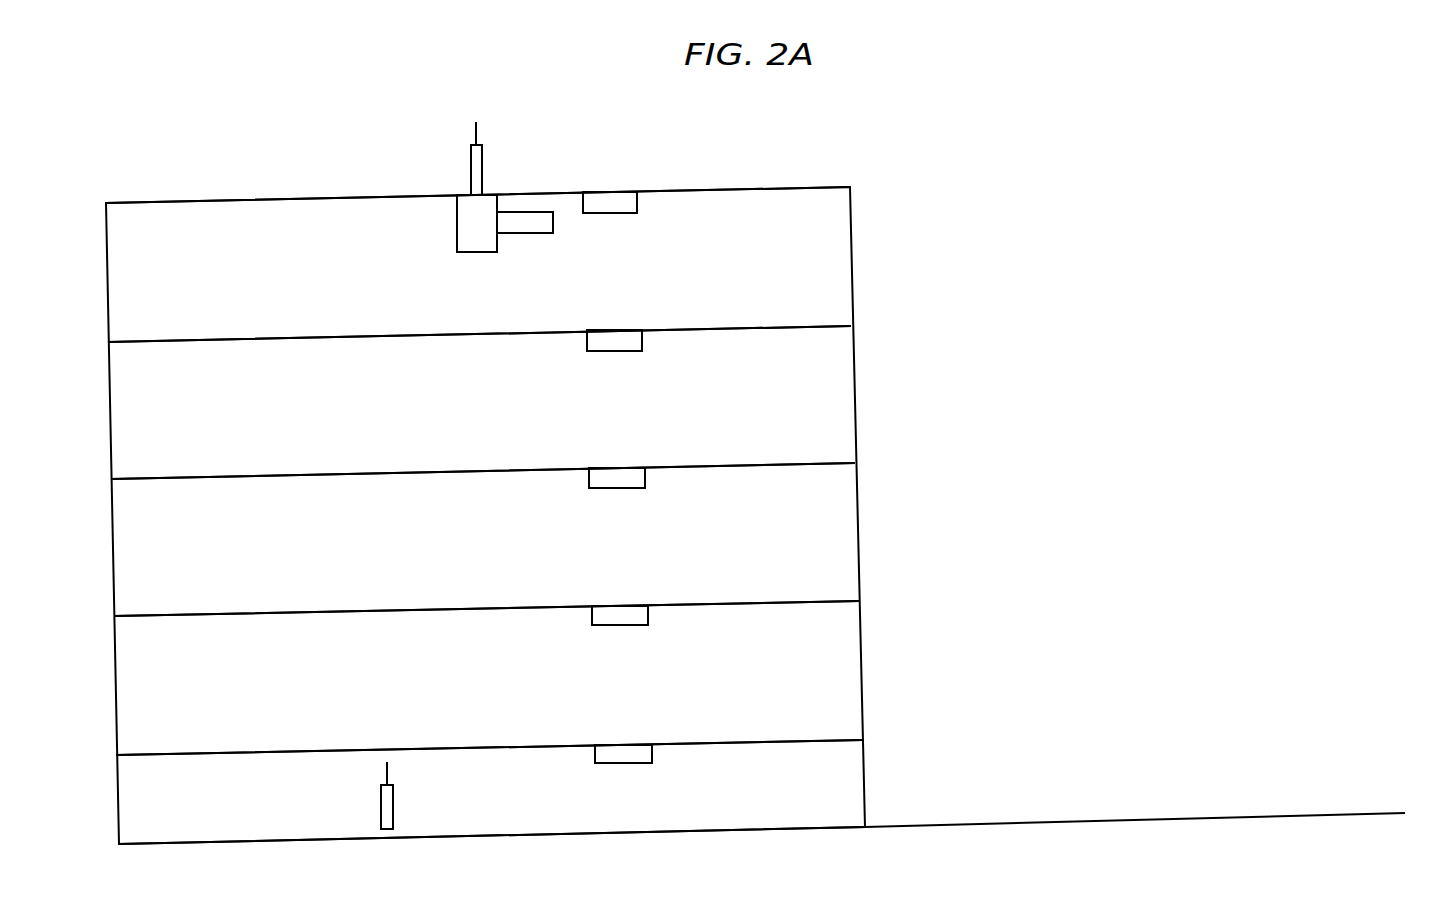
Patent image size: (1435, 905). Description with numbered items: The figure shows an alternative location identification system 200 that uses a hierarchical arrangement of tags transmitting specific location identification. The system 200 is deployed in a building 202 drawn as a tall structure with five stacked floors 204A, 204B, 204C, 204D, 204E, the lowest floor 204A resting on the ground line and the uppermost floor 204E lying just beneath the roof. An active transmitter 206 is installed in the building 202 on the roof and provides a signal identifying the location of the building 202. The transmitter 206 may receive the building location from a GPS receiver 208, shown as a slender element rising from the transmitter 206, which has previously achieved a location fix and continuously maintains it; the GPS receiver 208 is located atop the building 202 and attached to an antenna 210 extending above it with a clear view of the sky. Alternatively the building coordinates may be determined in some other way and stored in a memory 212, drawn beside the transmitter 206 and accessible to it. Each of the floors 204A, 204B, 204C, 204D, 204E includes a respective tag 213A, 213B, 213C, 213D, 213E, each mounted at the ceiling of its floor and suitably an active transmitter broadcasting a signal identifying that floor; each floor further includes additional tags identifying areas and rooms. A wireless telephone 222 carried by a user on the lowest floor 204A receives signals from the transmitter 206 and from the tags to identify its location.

The location identification system 200 is at (1137, 202).
The building 202 is at (689, 190).
The floor 204A is at (864, 805).
The floor 204B is at (860, 666).
The floor 204C is at (857, 527).
The floor 204D is at (853, 389).
The floor 204E is at (852, 250).
The active transmitter 206 is at (462, 254).
The GPS receiver 208 is at (482, 177).
The antenna 210 is at (477, 136).
The memory 212 is at (541, 236).
The tag 213A is at (608, 766).
The tag 213B is at (607, 628).
The tag 213C is at (602, 490).
The tag 213D is at (600, 353).
The tag 213E is at (597, 216).
The wireless telephone 222 is at (395, 811).